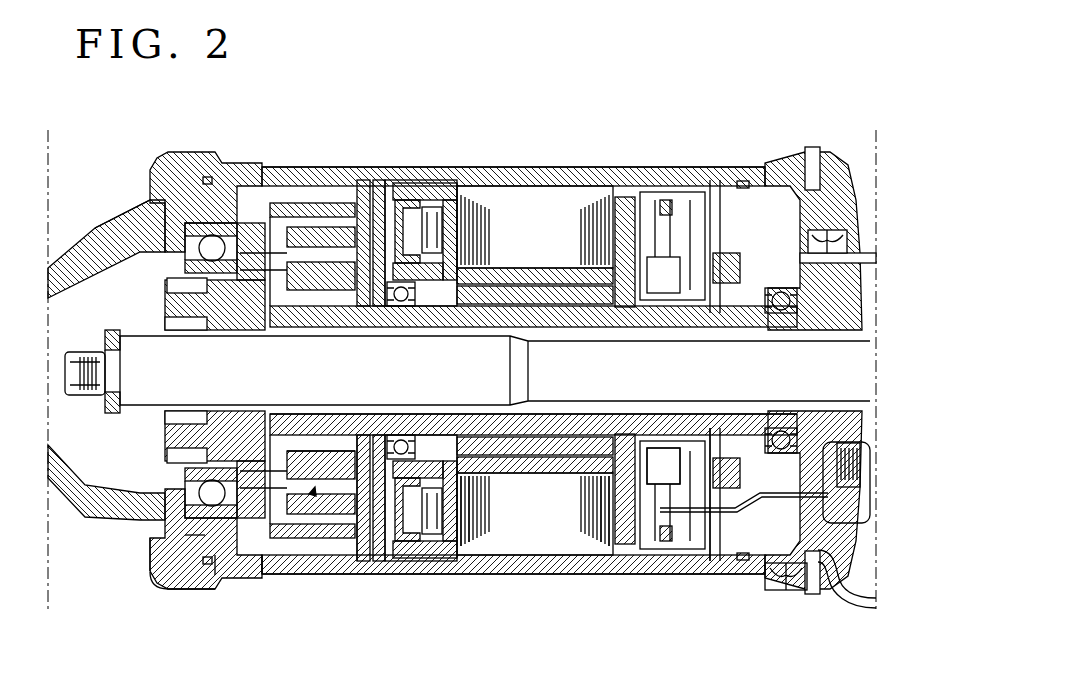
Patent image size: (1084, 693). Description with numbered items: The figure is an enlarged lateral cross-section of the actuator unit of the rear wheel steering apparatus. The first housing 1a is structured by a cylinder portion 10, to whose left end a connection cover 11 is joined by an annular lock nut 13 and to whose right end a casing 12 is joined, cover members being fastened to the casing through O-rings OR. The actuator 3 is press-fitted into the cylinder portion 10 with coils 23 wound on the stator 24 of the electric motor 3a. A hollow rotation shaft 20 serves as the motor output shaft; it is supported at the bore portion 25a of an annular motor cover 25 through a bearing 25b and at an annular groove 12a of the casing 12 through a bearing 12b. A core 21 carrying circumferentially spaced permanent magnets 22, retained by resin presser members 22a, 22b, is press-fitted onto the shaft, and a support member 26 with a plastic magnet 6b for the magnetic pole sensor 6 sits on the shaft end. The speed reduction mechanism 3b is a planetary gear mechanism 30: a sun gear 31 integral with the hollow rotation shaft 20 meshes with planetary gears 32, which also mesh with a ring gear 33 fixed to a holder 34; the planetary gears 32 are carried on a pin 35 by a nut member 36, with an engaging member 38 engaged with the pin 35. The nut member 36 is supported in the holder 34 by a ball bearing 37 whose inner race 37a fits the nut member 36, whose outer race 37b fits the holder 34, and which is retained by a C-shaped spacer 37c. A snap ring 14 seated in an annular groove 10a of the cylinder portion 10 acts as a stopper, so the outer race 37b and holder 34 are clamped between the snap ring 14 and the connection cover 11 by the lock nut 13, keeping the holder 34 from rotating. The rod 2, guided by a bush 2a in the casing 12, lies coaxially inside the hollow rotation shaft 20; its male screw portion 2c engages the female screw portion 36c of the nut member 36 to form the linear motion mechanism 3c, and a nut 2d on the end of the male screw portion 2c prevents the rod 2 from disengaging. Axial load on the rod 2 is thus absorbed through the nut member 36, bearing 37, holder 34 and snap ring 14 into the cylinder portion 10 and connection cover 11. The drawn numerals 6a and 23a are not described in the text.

The first housing 1a is at (538, 172).
The rod 2 is at (583, 388).
The bush 2a is at (860, 305).
The male screw portion 2c is at (148, 420).
The nut 2d is at (90, 403).
The actuator 3 is at (688, 166).
The electric motor 3a is at (505, 575).
The speed reduction mechanism 3b is at (269, 548).
The linear motion mechanism 3c is at (172, 455).
The magnetic pole sensor 6 is at (730, 245).
The bearing 6a is at (747, 267).
The plastic magnet 6b is at (722, 520).
The cylinder portion 10 is at (515, 175).
The annular groove 10a is at (380, 560).
The connection cover 11 is at (180, 315).
The casing 12 is at (788, 233).
The annular groove 12a is at (770, 562).
The bearing 12b is at (822, 565).
The lock nut 13 is at (200, 160).
The snap ring 14 is at (395, 235).
The hollow rotation shaft 20 is at (487, 313).
The core 21 is at (540, 293).
The permanent magnets 22 is at (533, 460).
The presser member 22a is at (470, 540).
The presser member 22b is at (655, 505).
The coils 23 is at (637, 220).
The terminal 23a is at (672, 520).
The stator 24 is at (618, 200).
The motor cover 25 is at (437, 177).
The bore portion 25a is at (403, 520).
The bearing 25b is at (365, 473).
The support member 26 is at (745, 500).
The planetary gear mechanism 30 is at (313, 492).
The sun gear 31 is at (377, 197).
The planetary gears 32 is at (330, 230).
The ring gear 33 is at (298, 255).
The holder 34 is at (268, 210).
The pin 35 is at (247, 240).
The nut member 36 is at (140, 240).
The female screw portion 36c is at (120, 292).
The bearing 37 is at (170, 230).
The inner race 37a is at (188, 540).
The outer race 37b is at (215, 562).
The spacer 37c is at (160, 550).
The engaging member 38 is at (363, 200).
The O-rings OR is at (207, 176).